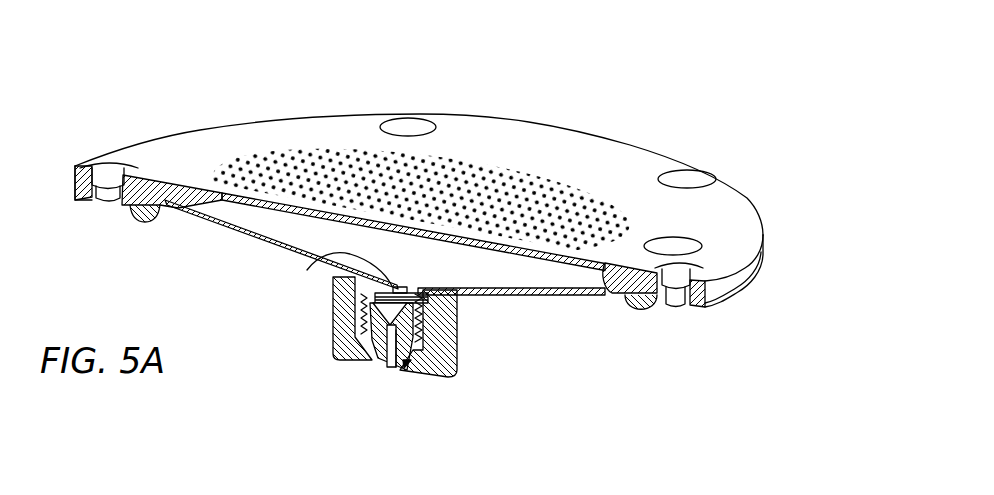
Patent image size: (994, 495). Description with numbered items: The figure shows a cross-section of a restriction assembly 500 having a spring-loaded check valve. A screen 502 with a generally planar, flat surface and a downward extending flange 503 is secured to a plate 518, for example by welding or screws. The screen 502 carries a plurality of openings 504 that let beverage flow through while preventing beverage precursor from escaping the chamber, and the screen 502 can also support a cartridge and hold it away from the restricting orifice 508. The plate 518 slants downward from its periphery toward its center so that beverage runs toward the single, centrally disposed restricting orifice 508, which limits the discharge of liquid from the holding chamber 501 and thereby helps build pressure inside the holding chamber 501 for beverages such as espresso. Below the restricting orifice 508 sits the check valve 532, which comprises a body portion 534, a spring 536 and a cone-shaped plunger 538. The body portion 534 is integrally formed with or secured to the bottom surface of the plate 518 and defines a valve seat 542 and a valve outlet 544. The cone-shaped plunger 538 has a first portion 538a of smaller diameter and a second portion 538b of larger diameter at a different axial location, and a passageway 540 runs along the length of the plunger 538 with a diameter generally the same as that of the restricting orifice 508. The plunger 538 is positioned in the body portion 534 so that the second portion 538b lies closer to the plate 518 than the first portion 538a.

The restriction assembly 500 is at (132, 98).
The holding chamber 501 is at (549, 276).
The screen 502 is at (583, 148).
The downward extending flange 503 is at (668, 299).
The openings 504 is at (630, 165).
The restricting orifice 508 is at (324, 261).
The plate 518 is at (240, 226).
The check valve 532 is at (489, 351).
The body portion 534 is at (333, 356).
The spring 536 is at (362, 298).
The cone-shaped plunger 538 is at (412, 345).
The first portion 538a is at (413, 363).
The second portion 538b is at (367, 337).
The passageway 540 is at (390, 366).
The valve seat 542 is at (446, 378).
The valve outlet 544 is at (410, 360).